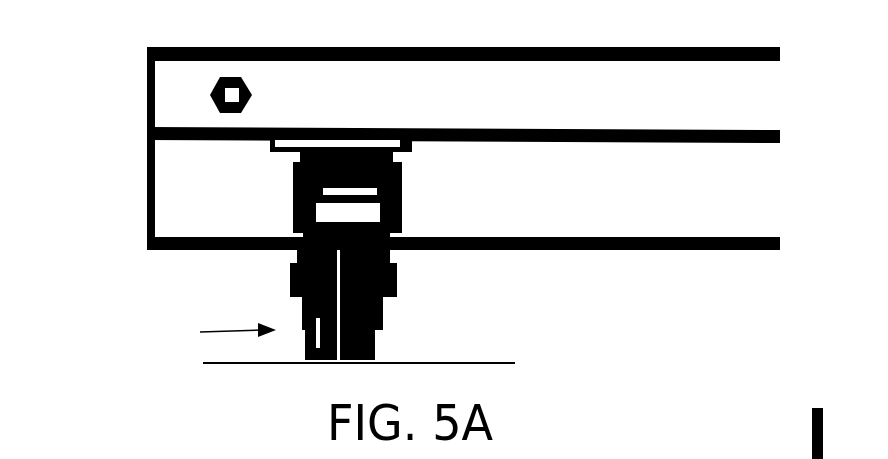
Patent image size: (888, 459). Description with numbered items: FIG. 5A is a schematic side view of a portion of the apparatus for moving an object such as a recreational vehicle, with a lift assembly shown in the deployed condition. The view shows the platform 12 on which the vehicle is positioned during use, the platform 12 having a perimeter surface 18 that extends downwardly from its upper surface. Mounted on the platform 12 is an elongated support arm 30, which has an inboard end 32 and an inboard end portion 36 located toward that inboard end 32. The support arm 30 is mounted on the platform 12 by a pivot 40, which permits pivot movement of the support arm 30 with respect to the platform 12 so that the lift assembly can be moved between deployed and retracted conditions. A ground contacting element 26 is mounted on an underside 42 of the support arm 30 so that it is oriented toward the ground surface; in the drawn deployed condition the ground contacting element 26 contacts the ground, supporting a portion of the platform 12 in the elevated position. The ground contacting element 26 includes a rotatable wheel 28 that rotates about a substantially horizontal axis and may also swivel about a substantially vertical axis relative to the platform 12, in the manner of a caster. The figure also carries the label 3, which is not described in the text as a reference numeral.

The mounting surface 3 is at (500, 362).
The platform 12 is at (221, 212).
The perimeter surface 18 is at (597, 197).
The ground contacting element 26 is at (210, 336).
The rotatable wheel 28 is at (380, 355).
The support arm 30 is at (687, 48).
The inboard end 32 is at (143, 87).
The inboard end portion 36 is at (303, 90).
The pivot 40 is at (237, 77).
The underside 42 is at (705, 143).